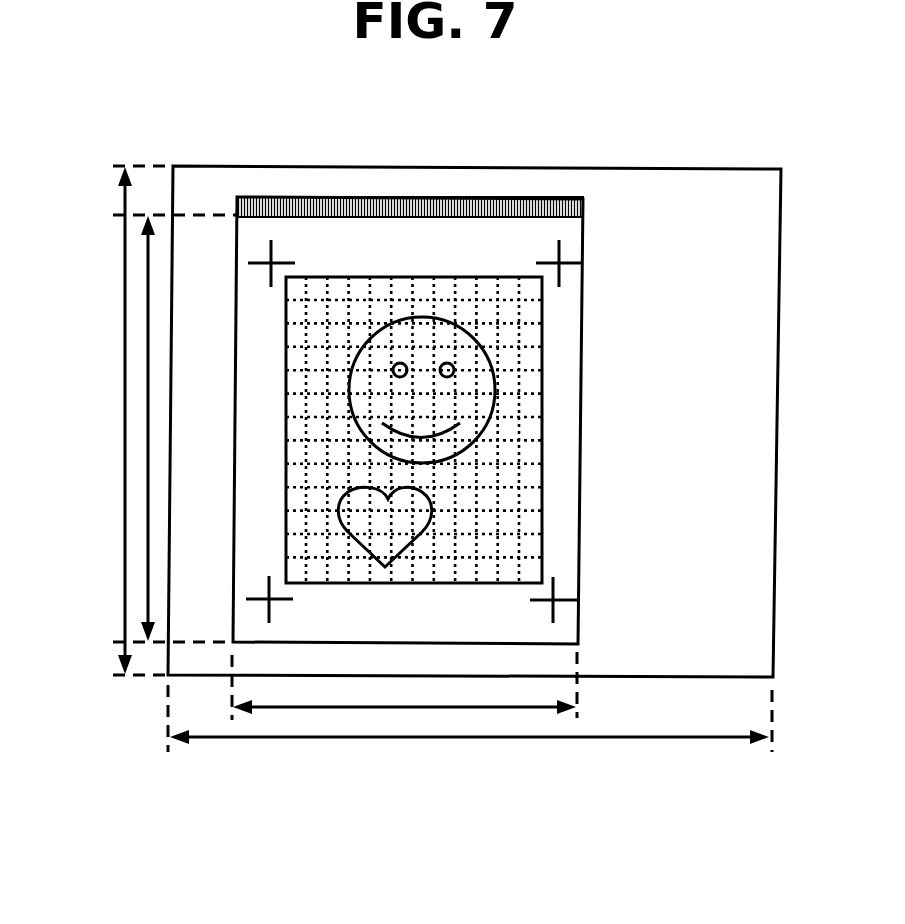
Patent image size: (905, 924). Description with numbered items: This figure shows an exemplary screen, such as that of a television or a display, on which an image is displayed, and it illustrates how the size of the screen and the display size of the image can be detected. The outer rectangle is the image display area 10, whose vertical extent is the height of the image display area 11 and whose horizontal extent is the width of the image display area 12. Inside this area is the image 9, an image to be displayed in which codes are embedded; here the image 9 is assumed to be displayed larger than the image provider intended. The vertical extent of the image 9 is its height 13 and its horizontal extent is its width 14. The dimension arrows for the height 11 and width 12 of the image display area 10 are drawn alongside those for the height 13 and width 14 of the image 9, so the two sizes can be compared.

The image 9 is at (297, 197).
The image display area 10 is at (507, 168).
The height of the image display area 11 is at (127, 315).
The width of the image display area 12 is at (577, 735).
The height of the image 13 is at (143, 403).
The width of the image 14 is at (373, 707).